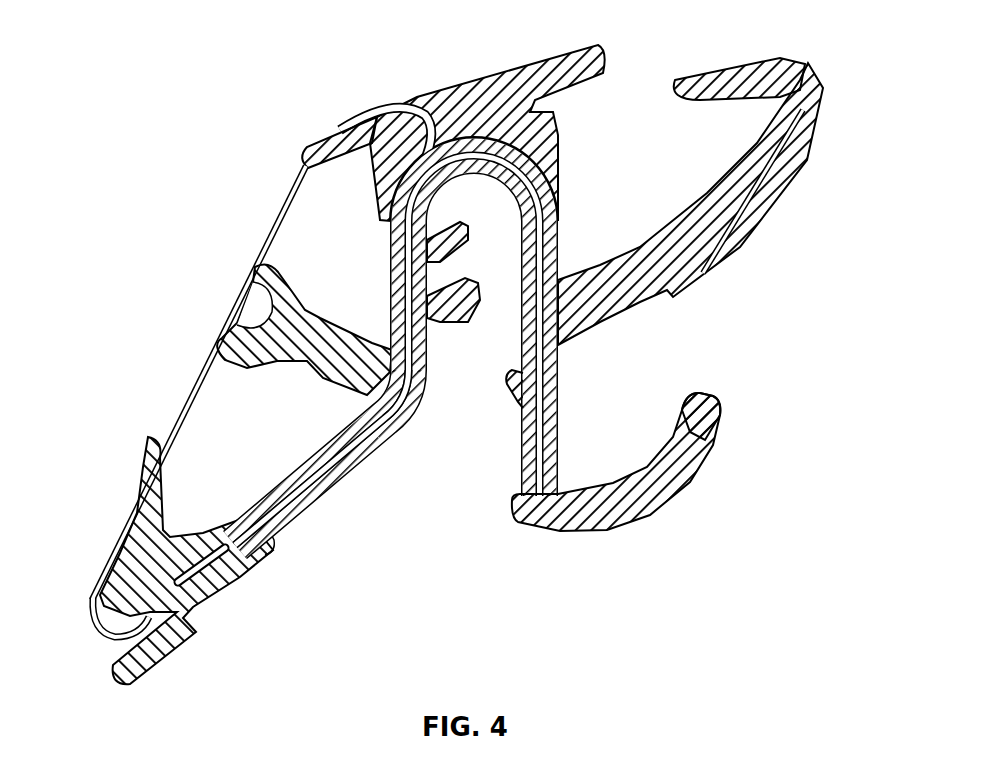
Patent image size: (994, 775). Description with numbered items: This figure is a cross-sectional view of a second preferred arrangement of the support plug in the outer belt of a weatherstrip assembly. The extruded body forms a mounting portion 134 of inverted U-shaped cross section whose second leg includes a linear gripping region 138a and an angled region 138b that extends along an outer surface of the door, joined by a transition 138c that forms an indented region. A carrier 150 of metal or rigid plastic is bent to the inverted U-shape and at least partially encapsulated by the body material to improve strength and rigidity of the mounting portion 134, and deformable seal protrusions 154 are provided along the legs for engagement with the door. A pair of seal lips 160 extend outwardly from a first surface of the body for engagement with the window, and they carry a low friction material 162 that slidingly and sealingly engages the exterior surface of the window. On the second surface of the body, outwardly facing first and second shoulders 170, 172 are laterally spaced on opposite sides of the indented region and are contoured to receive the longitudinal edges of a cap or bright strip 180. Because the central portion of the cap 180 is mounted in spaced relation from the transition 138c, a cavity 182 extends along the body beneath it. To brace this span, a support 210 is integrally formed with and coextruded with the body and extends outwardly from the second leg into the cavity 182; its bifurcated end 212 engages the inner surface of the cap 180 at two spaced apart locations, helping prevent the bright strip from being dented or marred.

The mounting portion 134 is at (553, 217).
The linear gripping region 138a is at (423, 340).
The angled region 138b is at (332, 473).
The transition 138c is at (407, 400).
The carrier 150 is at (223, 570).
The deformable seal protrusions 154 is at (273, 550).
The seal lips 160 is at (710, 78).
The low friction material 162 is at (767, 207).
The first shoulder 170 is at (388, 130).
The second shoulder 172 is at (97, 610).
The cap 180 is at (263, 240).
The cavity 182 is at (339, 283).
The support 210 is at (317, 360).
The bifurcated end 212 is at (237, 353).